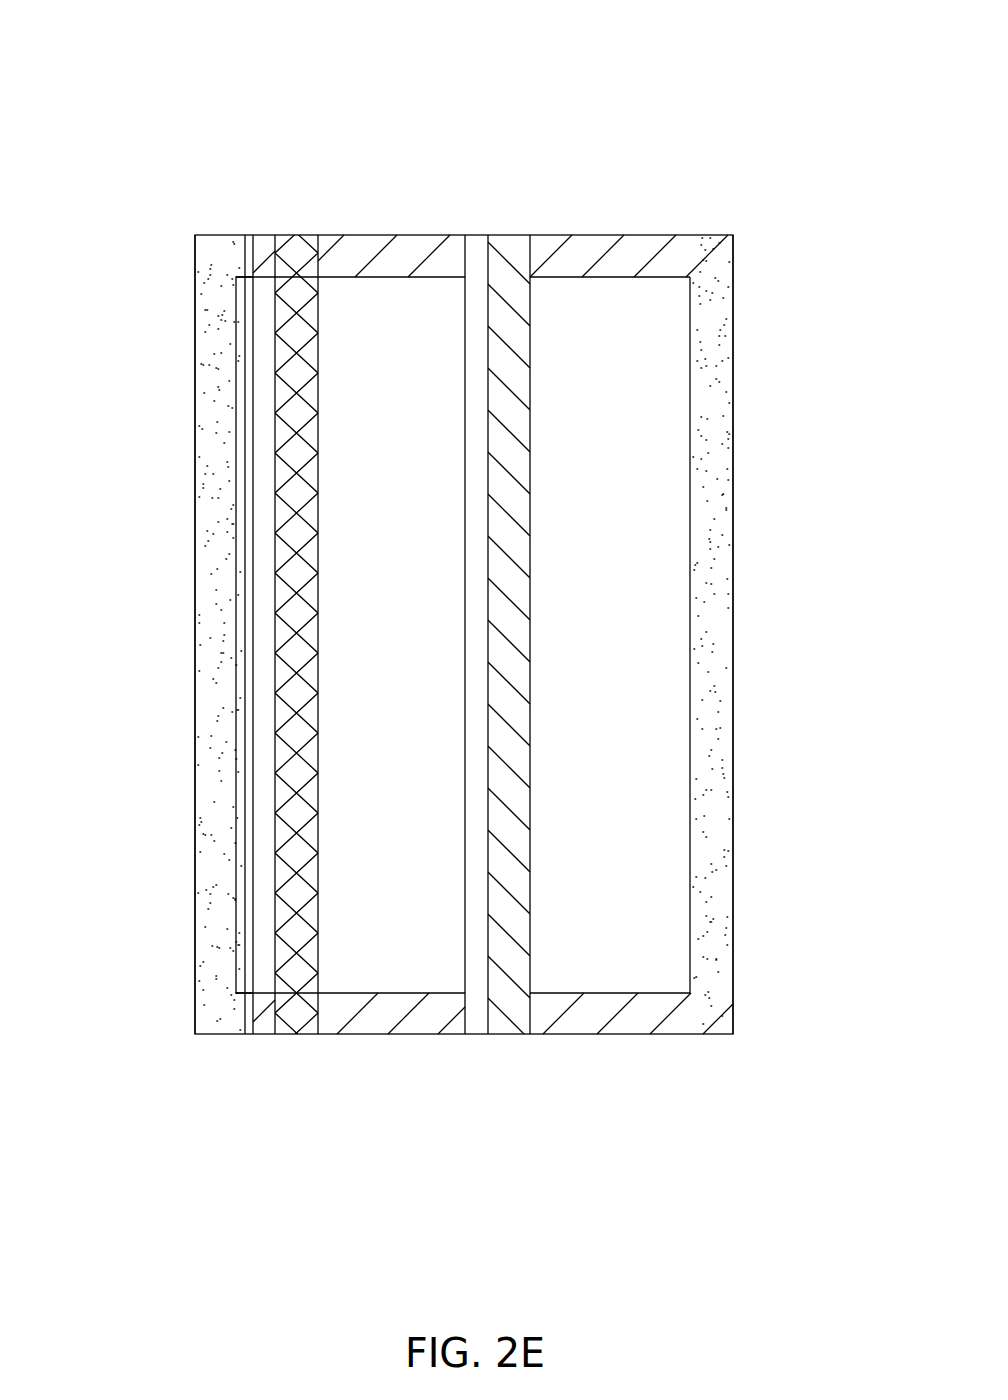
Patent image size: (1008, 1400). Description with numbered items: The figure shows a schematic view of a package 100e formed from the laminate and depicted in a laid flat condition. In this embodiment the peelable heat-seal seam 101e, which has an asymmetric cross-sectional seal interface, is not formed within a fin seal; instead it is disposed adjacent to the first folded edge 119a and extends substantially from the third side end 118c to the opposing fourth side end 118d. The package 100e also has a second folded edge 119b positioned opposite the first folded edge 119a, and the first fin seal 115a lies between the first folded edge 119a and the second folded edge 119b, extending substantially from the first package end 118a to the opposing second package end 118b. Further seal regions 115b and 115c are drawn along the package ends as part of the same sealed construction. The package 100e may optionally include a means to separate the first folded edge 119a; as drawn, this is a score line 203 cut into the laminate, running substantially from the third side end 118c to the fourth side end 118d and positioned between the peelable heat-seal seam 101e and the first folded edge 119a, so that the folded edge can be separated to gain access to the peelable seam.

The package 100e is at (517, 20).
The peelable heat-seal seam 101e is at (290, 357).
The first fin seal 115a is at (513, 262).
The upper right support 115b is at (612, 250).
The lower left support 115c is at (377, 1020).
The first package end 118a is at (195, 888).
The second package end 118b is at (733, 672).
The third side end 118c is at (415, 235).
The fourth side end 118d is at (582, 1037).
The first folded edge 119a is at (210, 670).
The second folded edge 119b is at (715, 520).
The score line 203 is at (245, 946).